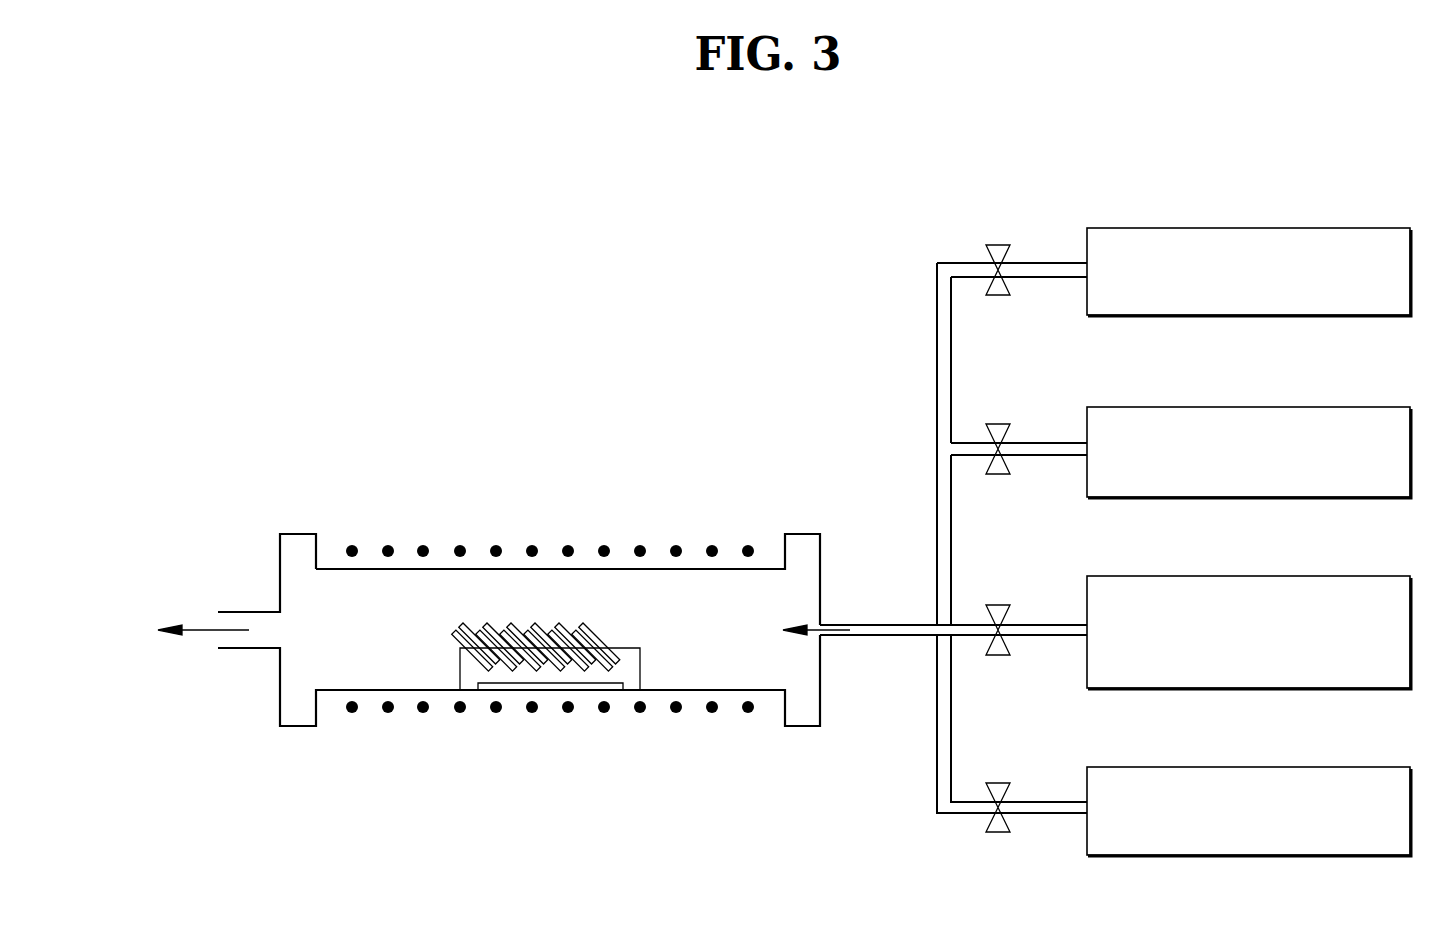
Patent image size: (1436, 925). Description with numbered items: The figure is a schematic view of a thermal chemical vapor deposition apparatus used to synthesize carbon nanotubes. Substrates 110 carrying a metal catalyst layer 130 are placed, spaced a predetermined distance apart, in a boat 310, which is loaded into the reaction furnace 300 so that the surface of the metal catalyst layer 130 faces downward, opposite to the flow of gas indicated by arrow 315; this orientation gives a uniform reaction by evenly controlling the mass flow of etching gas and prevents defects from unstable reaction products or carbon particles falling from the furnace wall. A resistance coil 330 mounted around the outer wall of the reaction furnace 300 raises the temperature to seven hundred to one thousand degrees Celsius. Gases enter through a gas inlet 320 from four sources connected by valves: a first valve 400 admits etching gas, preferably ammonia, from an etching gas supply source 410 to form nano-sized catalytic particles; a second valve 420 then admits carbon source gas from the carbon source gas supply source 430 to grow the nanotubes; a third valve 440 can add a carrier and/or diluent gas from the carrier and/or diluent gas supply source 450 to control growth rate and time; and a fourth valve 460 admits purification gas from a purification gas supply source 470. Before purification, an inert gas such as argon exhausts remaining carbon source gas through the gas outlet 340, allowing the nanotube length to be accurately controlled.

The substrate 110 is at (472, 627).
The metal catalyst layer 130 is at (464, 632).
The reaction furnace 300 is at (552, 568).
The boat 310 is at (640, 667).
The arrow indicating gas flow 315 is at (807, 632).
The gas inlet 320 is at (878, 624).
The resistance coil 330 is at (388, 716).
The gas outlet 340 is at (250, 611).
The first valve 400 is at (998, 423).
The etching gas supply source 410 is at (1250, 406).
The second valve 420 is at (998, 782).
The carbon source gas supply source 430 is at (1250, 766).
The third valve 440 is at (998, 604).
The carrier and/or diluent gas supply source 450 is at (1252, 575).
The fourth valve 460 is at (998, 244).
The purification gas supply source 470 is at (1250, 227).